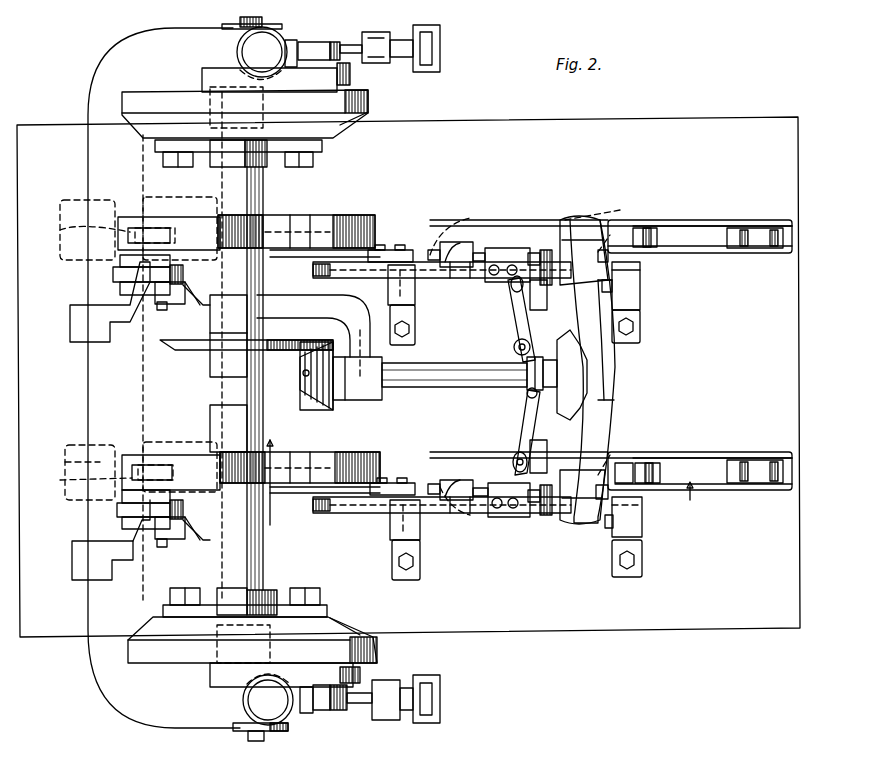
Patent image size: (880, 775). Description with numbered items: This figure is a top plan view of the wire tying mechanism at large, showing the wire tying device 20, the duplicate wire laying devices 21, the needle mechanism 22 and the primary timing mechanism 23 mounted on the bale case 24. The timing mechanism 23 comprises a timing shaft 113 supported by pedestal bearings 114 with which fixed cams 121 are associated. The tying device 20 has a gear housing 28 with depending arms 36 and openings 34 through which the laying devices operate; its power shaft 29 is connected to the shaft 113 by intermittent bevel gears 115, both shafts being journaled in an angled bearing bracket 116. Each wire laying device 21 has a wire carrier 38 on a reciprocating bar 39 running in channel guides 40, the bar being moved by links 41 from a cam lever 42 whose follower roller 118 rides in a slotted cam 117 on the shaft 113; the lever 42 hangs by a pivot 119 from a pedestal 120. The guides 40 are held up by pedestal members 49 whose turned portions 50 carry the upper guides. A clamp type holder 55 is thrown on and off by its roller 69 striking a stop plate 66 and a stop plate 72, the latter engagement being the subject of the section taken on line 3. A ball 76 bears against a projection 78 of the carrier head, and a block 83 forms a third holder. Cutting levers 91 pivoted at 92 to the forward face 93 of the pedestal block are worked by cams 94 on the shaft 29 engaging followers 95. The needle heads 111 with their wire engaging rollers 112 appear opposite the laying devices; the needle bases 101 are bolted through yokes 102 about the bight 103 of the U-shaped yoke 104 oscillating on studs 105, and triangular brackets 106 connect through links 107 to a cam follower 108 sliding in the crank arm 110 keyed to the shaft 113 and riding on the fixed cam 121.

The section line 3- 3 is at (483, 495).
The wire tying device 20 is at (603, 371).
The wire laying device 21 is at (420, 389).
The needle mechanism 22 is at (611, 345).
The primary timing mechanism 23 is at (254, 378).
The bale case 24 is at (408, 377).
The gear housing 28 is at (598, 352).
The power shaft 29 is at (430, 390).
The opening 34 is at (546, 248).
The depending arm 36 is at (580, 220).
The wire carrier 38 is at (606, 333).
The reciprocating bar 39 is at (488, 368).
The channel guide 40 is at (470, 280).
The link 41 is at (295, 262).
The cam lever 42 is at (113, 273).
The pedestal member 49 is at (415, 327).
The turned portion 50 is at (388, 293).
The clamp type holder 55 is at (462, 365).
The stop plate 66 is at (385, 248).
The roller 69 is at (448, 248).
The stop plate 72 is at (505, 248).
The ball 76 is at (607, 528).
The projection 78 is at (627, 471).
The block 83 is at (604, 292).
The cutting lever 91 is at (518, 306).
The pivot 92 is at (511, 285).
The forward face 93 is at (547, 300).
The cam 94 is at (527, 388).
The follower 95 is at (514, 347).
The needle base 101 is at (170, 197).
The yoke 102 is at (68, 200).
The bight 103 is at (67, 460).
The U-shaped yoke 104 is at (140, 44).
The stud 105 is at (240, 21).
The triangular bracket 106 is at (287, 42).
The link 107 is at (345, 42).
The cam follower 108 is at (370, 102).
The crank arm 110 is at (352, 74).
The needle head 111 is at (688, 225).
The wire engaging roller 112 is at (648, 228).
The timing shaft 113 is at (263, 430).
The pedestal bearing 114 is at (258, 168).
The bevel gear 115 is at (180, 350).
The angled bearing bracket 116 is at (372, 340).
The slotted cam 117 is at (372, 215).
The follower roller 118 is at (104, 351).
The pivot 119 is at (160, 310).
The pedestal 120 is at (130, 325).
The fixed cam 121 is at (372, 108).